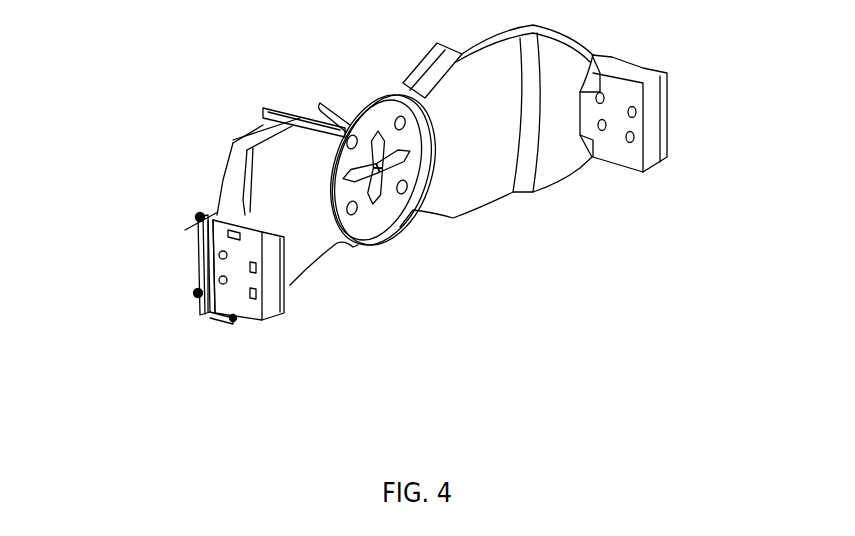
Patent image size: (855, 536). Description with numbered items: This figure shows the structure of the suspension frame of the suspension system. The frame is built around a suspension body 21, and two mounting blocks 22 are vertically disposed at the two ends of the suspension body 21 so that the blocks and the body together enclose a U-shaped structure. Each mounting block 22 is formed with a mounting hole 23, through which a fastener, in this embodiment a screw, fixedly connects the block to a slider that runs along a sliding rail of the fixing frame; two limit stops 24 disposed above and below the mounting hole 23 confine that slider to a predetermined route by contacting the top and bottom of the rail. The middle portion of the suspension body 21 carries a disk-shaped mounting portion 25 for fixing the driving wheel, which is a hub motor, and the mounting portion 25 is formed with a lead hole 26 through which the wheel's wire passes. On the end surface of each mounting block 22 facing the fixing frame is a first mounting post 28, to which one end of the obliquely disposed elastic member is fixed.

The suspension body 21 is at (315, 150).
The mounting block 22 is at (630, 97).
The mounting hole 23 is at (253, 315).
The limit stop 24 is at (227, 322).
The mounting portion 25 is at (370, 237).
The lead hole 26 is at (385, 160).
The first mounting post 28 is at (197, 293).